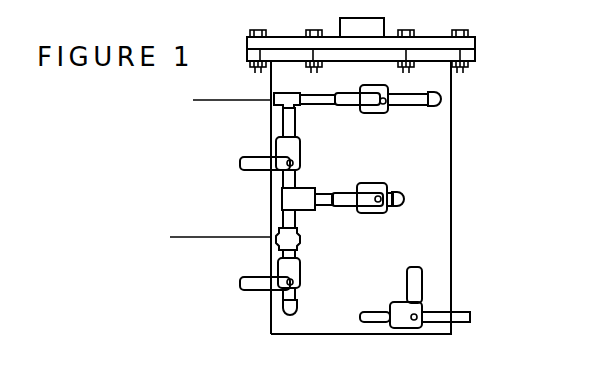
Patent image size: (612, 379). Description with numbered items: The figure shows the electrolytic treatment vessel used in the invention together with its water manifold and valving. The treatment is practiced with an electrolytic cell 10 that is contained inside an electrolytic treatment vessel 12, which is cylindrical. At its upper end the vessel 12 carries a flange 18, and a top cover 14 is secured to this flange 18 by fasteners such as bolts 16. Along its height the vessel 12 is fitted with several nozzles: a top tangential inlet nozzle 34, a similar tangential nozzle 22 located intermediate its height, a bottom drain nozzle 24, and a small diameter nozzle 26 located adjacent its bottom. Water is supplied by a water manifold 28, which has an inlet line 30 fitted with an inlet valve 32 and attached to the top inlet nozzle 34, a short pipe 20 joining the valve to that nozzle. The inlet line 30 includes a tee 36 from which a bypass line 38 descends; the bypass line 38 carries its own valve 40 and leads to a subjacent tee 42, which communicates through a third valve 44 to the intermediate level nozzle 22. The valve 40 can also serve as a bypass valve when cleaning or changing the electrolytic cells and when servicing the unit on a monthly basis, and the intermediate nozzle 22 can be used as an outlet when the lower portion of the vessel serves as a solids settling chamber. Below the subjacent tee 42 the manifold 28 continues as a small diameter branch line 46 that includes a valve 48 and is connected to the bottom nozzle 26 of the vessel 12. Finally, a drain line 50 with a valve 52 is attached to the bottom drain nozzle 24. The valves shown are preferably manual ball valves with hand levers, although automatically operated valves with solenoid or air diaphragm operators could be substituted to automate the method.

The electrolytic cell 10 is at (455, 143).
The electrolytic treatment vessel 12 is at (435, 235).
The top cover 14 is at (475, 42).
The bolts 16 is at (473, 31).
The flange 18 is at (470, 60).
The upper outlet pipe 20 is at (405, 105).
The tangential nozzle 22 is at (404, 198).
The bottom drain nozzle 24 is at (363, 323).
The small diameter nozzle 26 is at (283, 309).
The water manifold 28 is at (270, 203).
The inlet line 30 is at (320, 104).
The inlet valve 32 is at (362, 97).
The top tangential inlet nozzle 34 is at (443, 100).
The tee 36 is at (272, 95).
The bypass line 38 is at (283, 126).
The valve 40 is at (300, 160).
The subjacent tee 42 is at (300, 202).
The third valve 44 is at (376, 187).
The small diameter branch line 46 is at (298, 257).
The valve 48 is at (300, 275).
The drain line 50 is at (470, 312).
The valve 52 is at (405, 322).